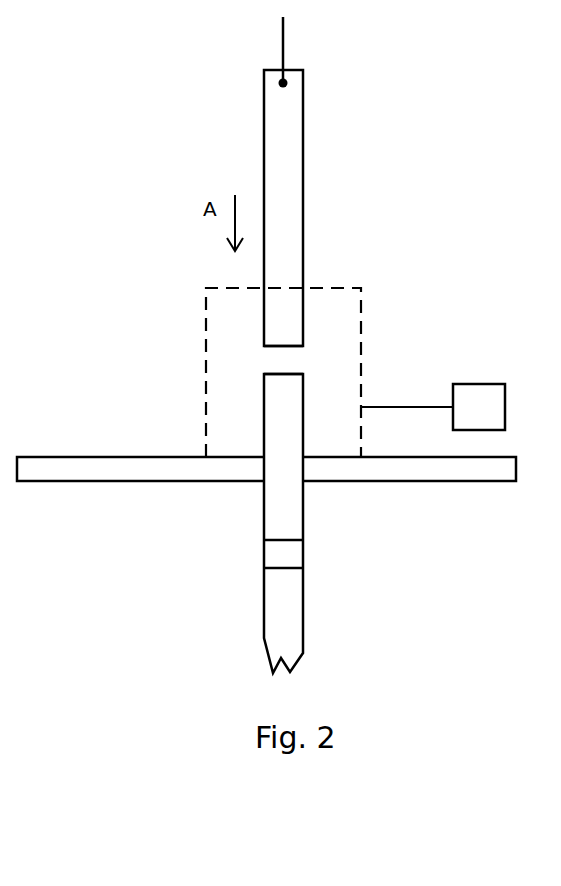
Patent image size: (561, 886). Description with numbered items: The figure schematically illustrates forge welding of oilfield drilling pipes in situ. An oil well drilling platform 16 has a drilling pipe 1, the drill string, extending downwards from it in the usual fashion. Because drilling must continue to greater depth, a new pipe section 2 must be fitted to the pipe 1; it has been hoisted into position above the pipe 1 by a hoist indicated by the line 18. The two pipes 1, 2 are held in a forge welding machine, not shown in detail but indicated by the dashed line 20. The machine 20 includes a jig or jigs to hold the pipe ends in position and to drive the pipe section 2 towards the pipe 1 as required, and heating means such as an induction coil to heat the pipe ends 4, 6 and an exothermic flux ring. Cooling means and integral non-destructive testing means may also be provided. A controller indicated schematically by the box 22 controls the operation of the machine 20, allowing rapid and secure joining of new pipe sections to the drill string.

The drilling pipe 1 is at (297, 612).
The pipe section 2 is at (295, 213).
The pipe end 4 is at (264, 374).
The pipe end 6 is at (303, 346).
The oil well drilling platform 16 is at (60, 467).
The hoist 18 is at (285, 50).
The forge welding machine 20 is at (361, 304).
The controller 22 is at (492, 418).